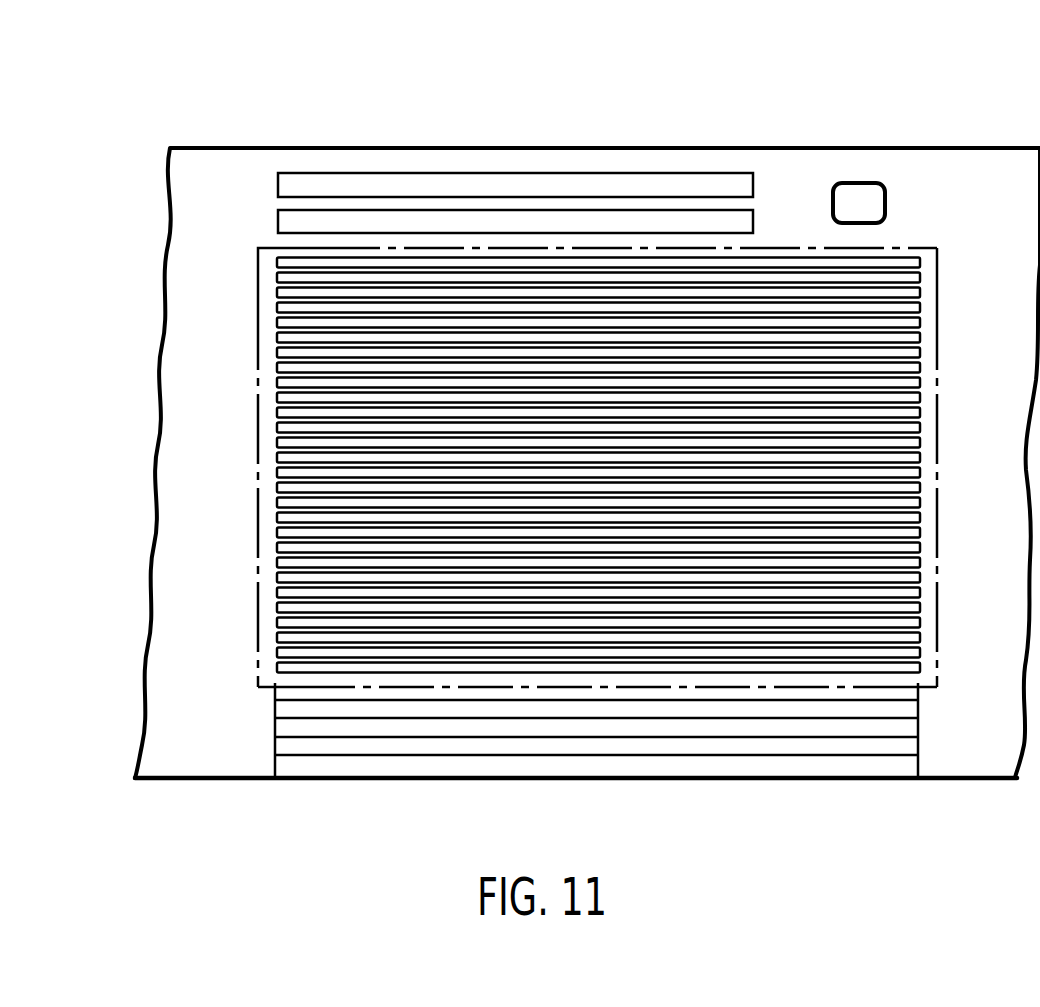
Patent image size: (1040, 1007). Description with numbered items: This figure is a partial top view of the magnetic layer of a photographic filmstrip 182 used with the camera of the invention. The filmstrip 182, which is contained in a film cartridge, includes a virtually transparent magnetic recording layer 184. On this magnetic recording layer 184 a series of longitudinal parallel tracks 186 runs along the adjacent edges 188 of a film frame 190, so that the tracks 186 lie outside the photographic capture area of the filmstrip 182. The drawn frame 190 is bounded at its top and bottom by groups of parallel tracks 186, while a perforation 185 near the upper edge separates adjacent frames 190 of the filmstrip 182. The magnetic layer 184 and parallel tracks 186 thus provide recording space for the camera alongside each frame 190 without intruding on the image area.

The photographic filmstrip 182 is at (220, 147).
The magnetic recording layer 184 is at (779, 167).
The perforation 185 is at (848, 183).
The parallel tracks 186 is at (535, 182).
The edges 188 is at (970, 763).
The film frame 190 is at (937, 248).